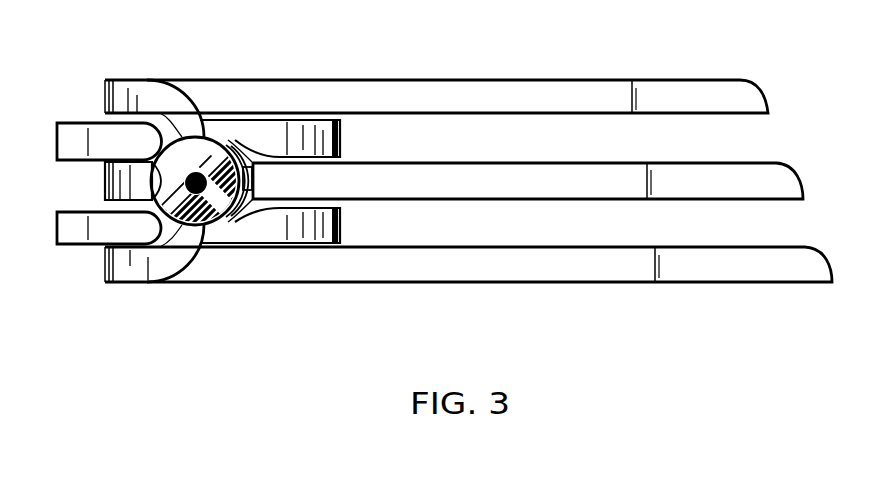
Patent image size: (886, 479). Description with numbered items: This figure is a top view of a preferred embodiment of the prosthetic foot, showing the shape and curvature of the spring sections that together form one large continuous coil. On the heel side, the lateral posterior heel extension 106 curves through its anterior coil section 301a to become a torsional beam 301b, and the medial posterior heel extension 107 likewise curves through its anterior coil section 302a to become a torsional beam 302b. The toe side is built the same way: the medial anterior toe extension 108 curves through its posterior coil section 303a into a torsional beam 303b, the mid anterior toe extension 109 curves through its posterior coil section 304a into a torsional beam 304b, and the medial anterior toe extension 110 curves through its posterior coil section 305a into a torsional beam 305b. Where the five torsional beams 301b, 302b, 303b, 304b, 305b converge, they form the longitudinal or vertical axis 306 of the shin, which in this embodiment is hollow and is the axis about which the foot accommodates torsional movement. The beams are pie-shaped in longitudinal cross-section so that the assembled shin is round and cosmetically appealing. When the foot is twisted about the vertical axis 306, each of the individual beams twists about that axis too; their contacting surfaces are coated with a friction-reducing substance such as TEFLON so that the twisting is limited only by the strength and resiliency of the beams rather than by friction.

The lateral posterior heel extension 106 is at (82, 137).
The medial posterior heel extension 107 is at (82, 232).
The medial anterior toe extension 108 is at (577, 267).
The mid anterior toe extension 109 is at (540, 183).
The medial anterior toe extension 110 is at (540, 93).
The anterior coil section 301a is at (340, 137).
The torsional beam 301b is at (235, 150).
The anterior coil section 302a is at (340, 222).
The torsional beam 302b is at (237, 230).
The posterior coil section 303a is at (163, 257).
The torsional beam 303b is at (190, 227).
The posterior coil section 304a is at (122, 178).
The torsional beam 304b is at (137, 194).
The posterior coil section 305a is at (152, 102).
The torsional beam 305b is at (187, 143).
The vertical axis 306 is at (207, 178).